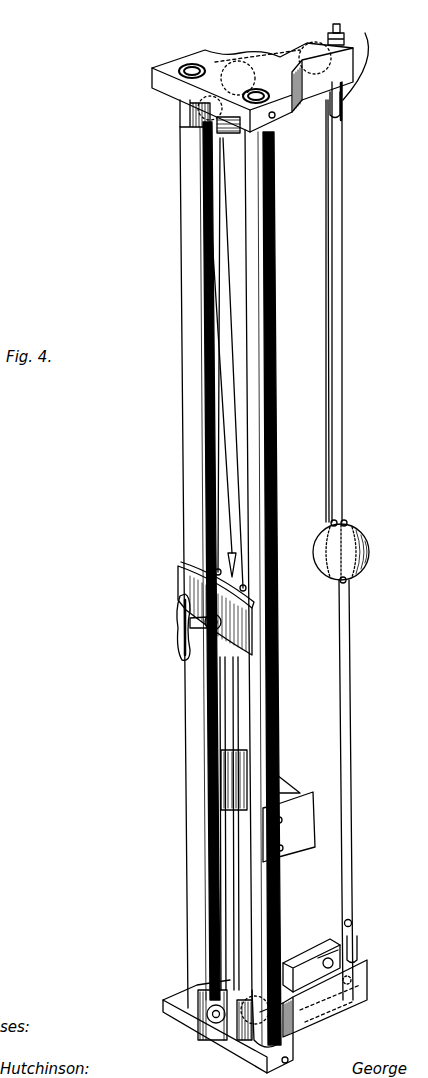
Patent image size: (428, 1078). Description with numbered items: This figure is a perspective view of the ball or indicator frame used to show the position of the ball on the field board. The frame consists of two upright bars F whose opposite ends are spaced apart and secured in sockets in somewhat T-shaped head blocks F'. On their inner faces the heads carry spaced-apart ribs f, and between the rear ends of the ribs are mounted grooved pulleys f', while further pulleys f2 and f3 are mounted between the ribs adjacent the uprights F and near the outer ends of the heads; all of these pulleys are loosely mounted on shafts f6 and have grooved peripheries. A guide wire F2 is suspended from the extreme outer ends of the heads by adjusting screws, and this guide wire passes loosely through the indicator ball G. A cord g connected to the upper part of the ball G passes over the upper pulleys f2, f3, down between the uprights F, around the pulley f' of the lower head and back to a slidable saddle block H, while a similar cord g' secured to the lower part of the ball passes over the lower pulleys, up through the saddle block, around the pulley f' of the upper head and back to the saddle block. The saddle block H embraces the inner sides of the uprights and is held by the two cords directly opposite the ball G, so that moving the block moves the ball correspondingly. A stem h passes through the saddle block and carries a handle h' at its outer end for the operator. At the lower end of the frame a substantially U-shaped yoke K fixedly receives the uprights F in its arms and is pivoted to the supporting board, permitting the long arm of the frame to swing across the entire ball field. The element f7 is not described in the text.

The upright bars F is at (225, 584).
The head blocks F' is at (247, 546).
The guide wire F2 is at (344, 463).
The ribs f is at (311, 973).
The grooved pulleys f' is at (207, 567).
The pulleys f2 is at (238, 67).
The pulleys f3 is at (313, 77).
The shafts f6 is at (350, 998).
The set screw / nut f7 is at (343, 33).
The cord or wire g is at (242, 505).
The wire or cord g' is at (264, 592).
The ball G is at (369, 559).
The saddle block H is at (190, 580).
The stem h is at (190, 653).
The handle h' is at (159, 627).
The yoke K is at (290, 773).